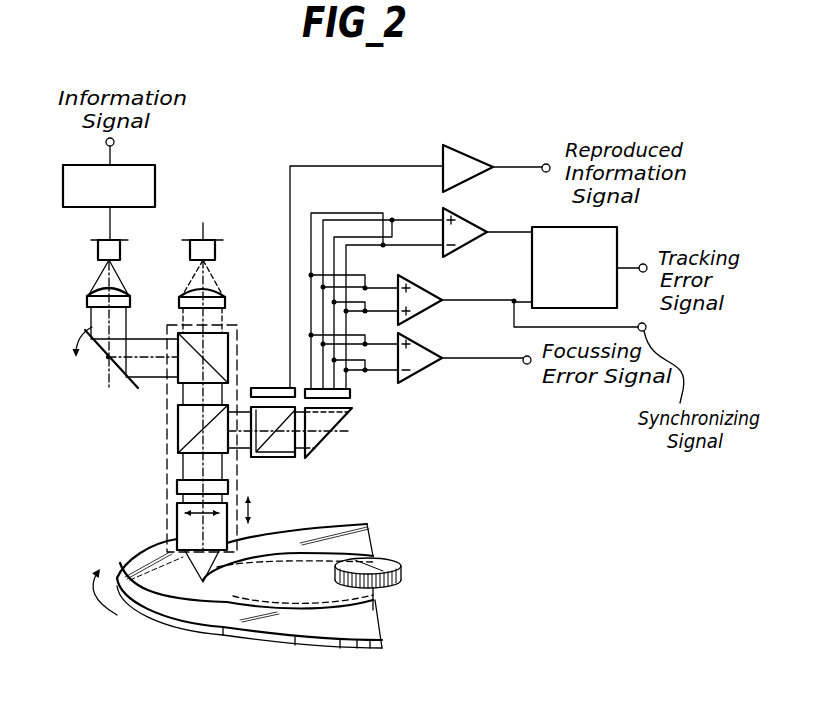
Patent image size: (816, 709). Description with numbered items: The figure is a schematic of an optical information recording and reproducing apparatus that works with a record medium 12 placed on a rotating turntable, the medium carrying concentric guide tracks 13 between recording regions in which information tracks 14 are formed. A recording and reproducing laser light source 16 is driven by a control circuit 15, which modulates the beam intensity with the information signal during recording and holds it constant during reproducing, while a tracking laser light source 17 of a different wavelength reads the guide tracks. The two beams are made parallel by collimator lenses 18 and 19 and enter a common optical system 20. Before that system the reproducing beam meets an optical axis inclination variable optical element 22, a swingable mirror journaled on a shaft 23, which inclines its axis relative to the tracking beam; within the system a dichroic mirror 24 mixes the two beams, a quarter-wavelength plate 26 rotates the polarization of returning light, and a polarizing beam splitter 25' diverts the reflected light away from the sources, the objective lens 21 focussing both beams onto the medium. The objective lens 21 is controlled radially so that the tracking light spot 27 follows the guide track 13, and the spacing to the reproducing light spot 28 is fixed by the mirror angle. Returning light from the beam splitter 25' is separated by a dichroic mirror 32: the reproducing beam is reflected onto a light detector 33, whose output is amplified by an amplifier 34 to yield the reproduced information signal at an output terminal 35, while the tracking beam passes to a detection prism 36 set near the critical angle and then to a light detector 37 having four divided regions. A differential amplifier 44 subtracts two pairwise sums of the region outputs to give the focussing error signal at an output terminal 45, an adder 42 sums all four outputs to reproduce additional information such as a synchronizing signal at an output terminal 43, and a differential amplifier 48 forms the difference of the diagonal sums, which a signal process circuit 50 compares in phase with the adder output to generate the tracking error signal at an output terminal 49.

The record medium 12 is at (167, 600).
The guide track 13 is at (227, 602).
The information track 14 is at (373, 607).
The control circuit 15 is at (63, 188).
The recording and reproducing laser light source 16 is at (98, 252).
The tracking laser light source 17 is at (208, 247).
The collimator lens 18 is at (87, 298).
The collimator lens 19 is at (218, 298).
The common optical system 20 is at (237, 462).
The objective lens 21 is at (237, 530).
The optical axis inclination variable optical element 22 is at (100, 327).
The shaft 23 is at (108, 358).
The dichroic mirror 24 is at (228, 355).
The polarizing beam splitter 25' is at (168, 429).
The quarter-wavelength plate 26 is at (177, 487).
The tracking light spot 27 is at (180, 560).
The reproducing light spot 28 is at (127, 562).
The dichroic mirror 32 is at (280, 458).
The light detector 33 is at (280, 373).
The amplifier 34 is at (475, 158).
The output terminal 35 is at (548, 164).
The detection prism 36 is at (337, 425).
The light detector 37 is at (350, 395).
The adder 42 is at (432, 312).
The output terminal 43 is at (646, 331).
The differential amplifier 44 is at (425, 373).
The output terminal 45 is at (527, 364).
The differential amplifier 48 is at (467, 248).
The output terminal 49 is at (645, 262).
The signal process circuit 50 is at (618, 238).